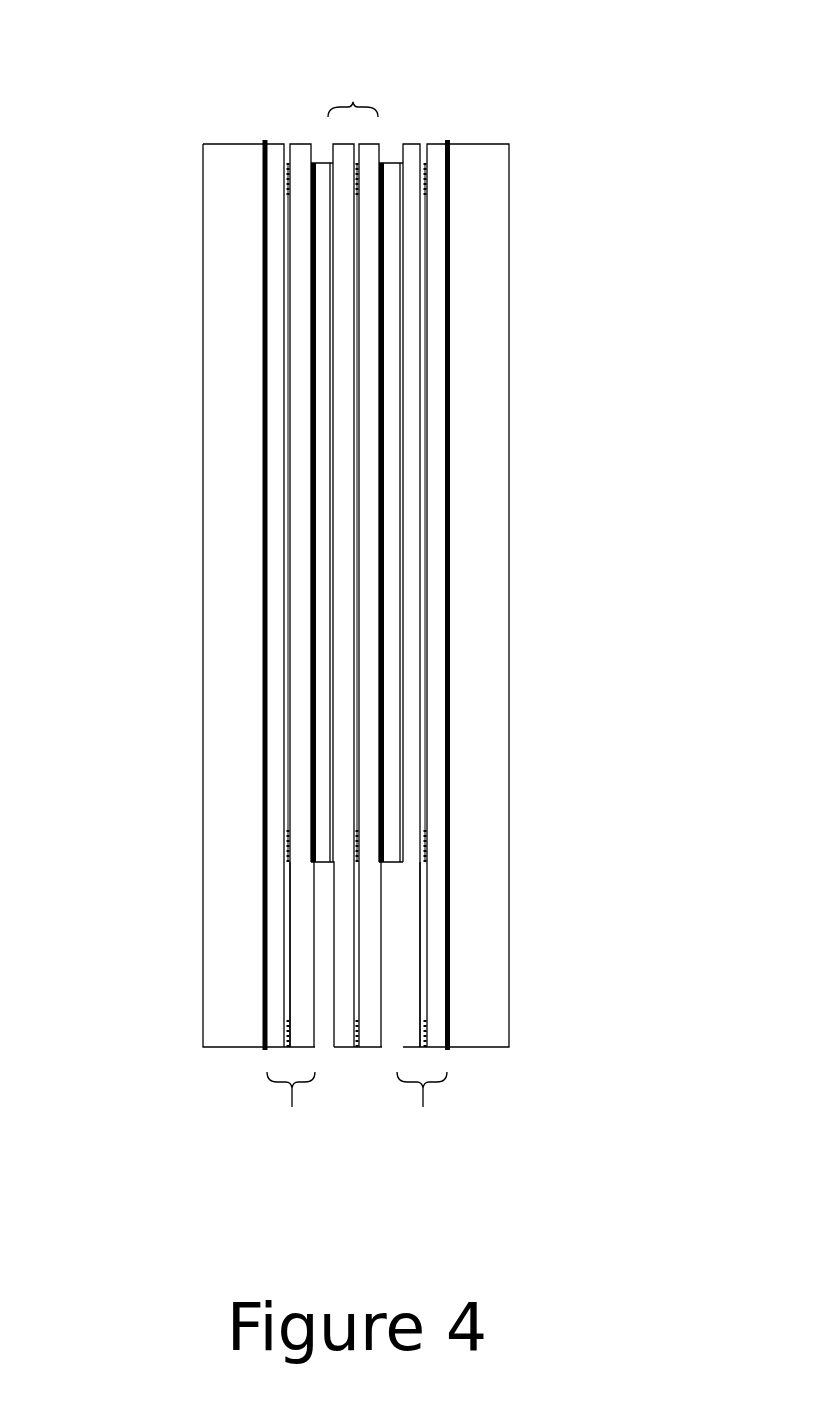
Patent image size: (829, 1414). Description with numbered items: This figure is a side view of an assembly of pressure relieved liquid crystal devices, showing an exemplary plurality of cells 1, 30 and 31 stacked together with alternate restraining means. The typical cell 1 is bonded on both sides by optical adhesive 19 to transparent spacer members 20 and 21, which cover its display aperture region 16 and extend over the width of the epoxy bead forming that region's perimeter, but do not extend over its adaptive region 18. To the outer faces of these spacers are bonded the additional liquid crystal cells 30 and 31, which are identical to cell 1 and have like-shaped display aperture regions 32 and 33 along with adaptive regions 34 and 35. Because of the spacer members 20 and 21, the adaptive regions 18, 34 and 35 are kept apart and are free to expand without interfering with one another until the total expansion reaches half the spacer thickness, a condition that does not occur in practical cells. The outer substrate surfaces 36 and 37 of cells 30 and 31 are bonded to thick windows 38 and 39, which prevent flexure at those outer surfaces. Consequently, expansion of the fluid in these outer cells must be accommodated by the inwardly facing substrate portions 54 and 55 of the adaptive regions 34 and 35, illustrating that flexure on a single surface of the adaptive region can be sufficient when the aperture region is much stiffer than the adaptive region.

The cell 1 is at (353, 102).
The display aperture region 16 is at (356, 428).
The adaptive region 18 is at (362, 927).
The optical adhesive 19 is at (384, 163).
The transparent spacer member 20 is at (319, 163).
The transparent spacer member 21 is at (383, 165).
The liquid crystal cell 30 is at (300, 644).
The liquid crystal cell 31 is at (413, 644).
The display aperture region 32 is at (286, 370).
The display aperture region 33 is at (424, 368).
The adaptive region 34 is at (296, 985).
The adaptive region 35 is at (423, 985).
The outer substrate surface 36 is at (262, 600).
The outer substrate surface 37 is at (450, 598).
The thick window 38 is at (212, 145).
The thick window 39 is at (500, 144).
The inwardly facing substrate portion 54 is at (315, 940).
The inwardly facing substrate portion 55 is at (403, 943).